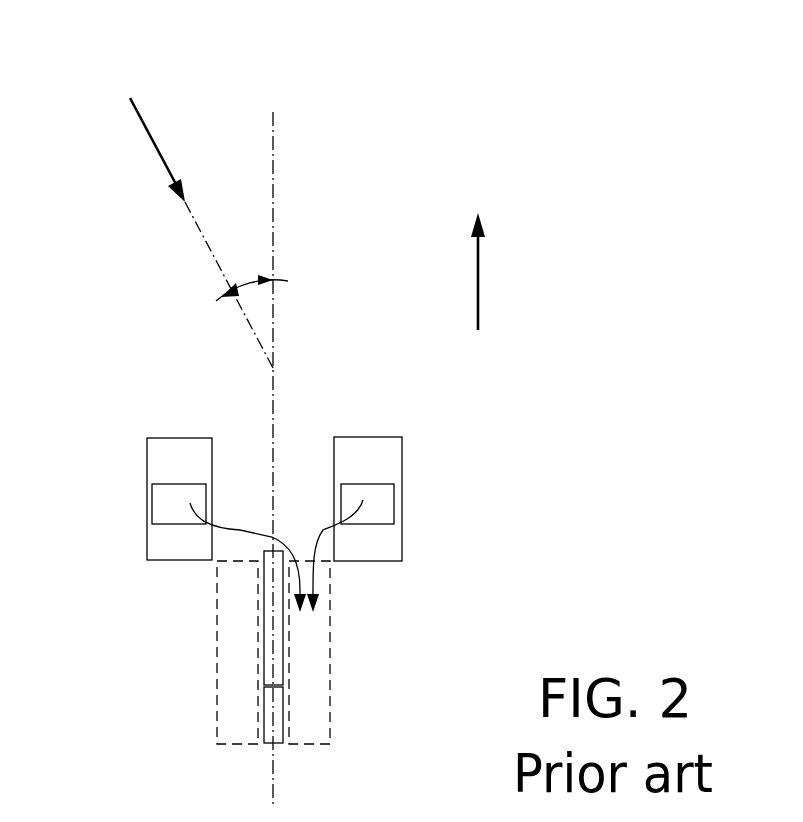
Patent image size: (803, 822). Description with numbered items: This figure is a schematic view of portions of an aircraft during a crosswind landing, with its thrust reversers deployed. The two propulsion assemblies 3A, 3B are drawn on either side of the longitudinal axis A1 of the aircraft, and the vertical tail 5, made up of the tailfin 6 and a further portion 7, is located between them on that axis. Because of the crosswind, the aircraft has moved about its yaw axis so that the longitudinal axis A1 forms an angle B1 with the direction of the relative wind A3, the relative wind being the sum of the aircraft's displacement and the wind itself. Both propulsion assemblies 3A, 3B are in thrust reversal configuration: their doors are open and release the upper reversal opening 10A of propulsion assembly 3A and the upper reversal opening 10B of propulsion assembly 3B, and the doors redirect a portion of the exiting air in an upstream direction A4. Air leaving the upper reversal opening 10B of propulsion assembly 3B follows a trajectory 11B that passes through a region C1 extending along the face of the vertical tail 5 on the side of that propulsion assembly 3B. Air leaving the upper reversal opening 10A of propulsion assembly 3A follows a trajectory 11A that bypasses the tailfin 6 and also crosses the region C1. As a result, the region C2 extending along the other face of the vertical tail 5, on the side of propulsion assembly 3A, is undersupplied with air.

The longitudinal axis A1 is at (275, 118).
The relative wind A3 is at (160, 140).
The upstream direction A4 is at (480, 270).
The angle B1 is at (236, 284).
The propulsion assembly 3A is at (164, 446).
The propulsion assembly 3B is at (388, 444).
The upper reversal opening 10A is at (152, 495).
The upper reversal opening 10B is at (397, 513).
The trajectory 11A is at (250, 530).
The trajectory 11B is at (323, 528).
The vertical tail 5 is at (437, 573).
The tailfin 6 is at (280, 647).
The light guide end portion 7 is at (280, 715).
The region C1 is at (317, 737).
The region C2 is at (218, 737).